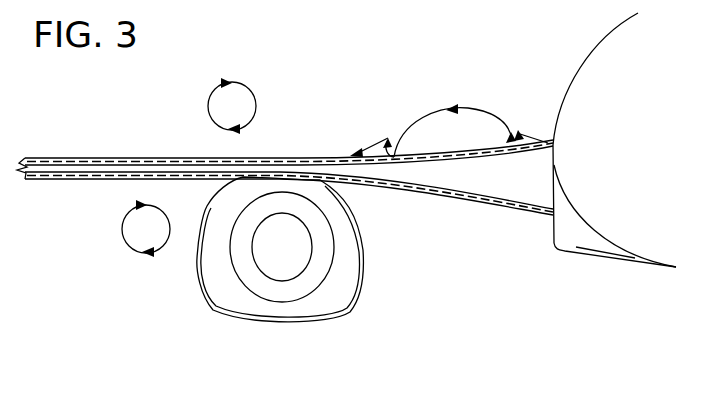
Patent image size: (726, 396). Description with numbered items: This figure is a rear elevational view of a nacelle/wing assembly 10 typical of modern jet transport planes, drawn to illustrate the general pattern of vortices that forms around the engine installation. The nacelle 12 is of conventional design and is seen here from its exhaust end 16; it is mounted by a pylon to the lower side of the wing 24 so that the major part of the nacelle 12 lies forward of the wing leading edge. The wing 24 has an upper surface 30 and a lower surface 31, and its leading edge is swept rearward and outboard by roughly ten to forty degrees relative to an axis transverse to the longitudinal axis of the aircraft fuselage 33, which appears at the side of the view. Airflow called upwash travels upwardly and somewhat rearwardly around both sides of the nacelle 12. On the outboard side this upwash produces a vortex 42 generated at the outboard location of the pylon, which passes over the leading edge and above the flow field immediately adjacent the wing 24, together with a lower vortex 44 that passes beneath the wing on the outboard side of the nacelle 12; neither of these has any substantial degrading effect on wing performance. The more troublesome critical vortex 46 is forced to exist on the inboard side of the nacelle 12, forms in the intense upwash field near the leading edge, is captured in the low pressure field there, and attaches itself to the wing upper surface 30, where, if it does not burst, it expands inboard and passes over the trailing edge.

The nacelle/wing assembly 10 is at (91, 112).
The nacelle 12 is at (185, 281).
The exhaust end 16 is at (336, 248).
The wing 24 is at (87, 153).
The upper surface 30 is at (193, 158).
The lower surface 31 is at (105, 179).
The aircraft fuselage 33 is at (564, 82).
The vortex 42 is at (208, 112).
The lower vortex 44 is at (122, 223).
The critical vortex 46 is at (467, 110).